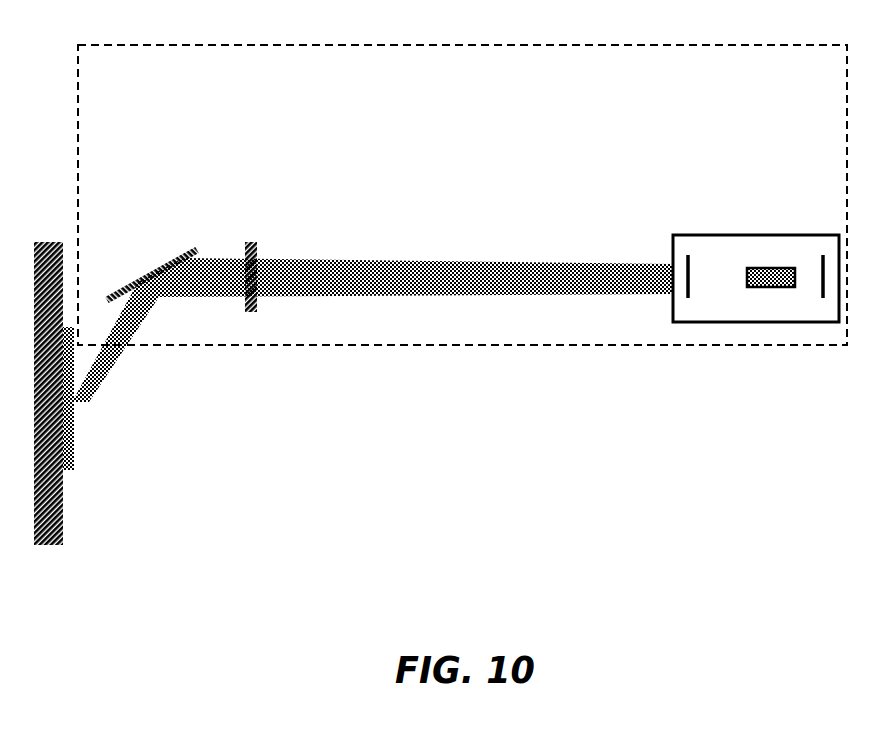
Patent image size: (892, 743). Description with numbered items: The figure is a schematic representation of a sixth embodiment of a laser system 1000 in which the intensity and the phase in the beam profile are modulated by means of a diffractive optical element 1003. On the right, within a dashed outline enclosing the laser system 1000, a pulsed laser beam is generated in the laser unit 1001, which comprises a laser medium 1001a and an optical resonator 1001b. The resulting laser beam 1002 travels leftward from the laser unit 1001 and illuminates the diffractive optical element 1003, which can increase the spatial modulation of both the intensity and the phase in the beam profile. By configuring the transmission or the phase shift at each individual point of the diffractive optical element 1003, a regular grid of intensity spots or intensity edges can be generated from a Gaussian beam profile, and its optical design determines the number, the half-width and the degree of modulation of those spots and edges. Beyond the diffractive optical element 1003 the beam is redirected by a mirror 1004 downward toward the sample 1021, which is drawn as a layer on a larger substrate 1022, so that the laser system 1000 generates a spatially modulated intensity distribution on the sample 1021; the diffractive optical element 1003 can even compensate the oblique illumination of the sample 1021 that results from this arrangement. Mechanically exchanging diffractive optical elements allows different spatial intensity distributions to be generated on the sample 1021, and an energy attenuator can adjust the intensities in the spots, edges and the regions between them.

The laser system 1000 is at (539, 347).
The laser unit 1001 is at (797, 225).
The laser medium 1001a is at (752, 263).
The optical resonator 1001b is at (820, 300).
The light beam 1002 is at (637, 253).
The diffractive optical element 1003 is at (248, 212).
The reflecting mirror 1004 is at (147, 250).
The sample 1021 is at (85, 455).
The light guide plate 1022 is at (65, 543).